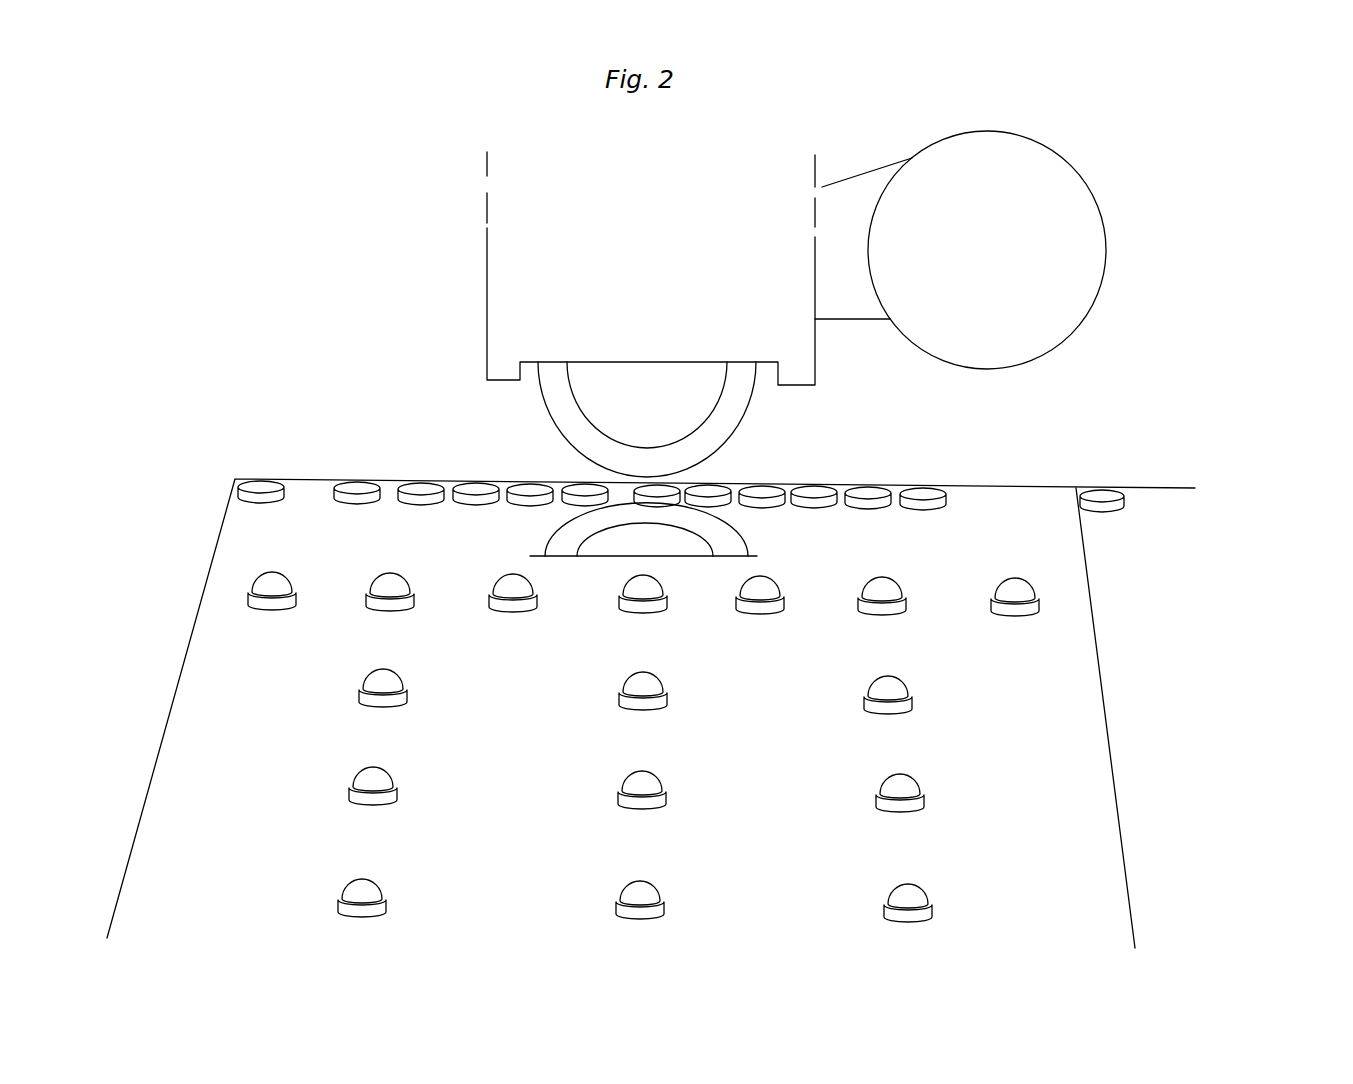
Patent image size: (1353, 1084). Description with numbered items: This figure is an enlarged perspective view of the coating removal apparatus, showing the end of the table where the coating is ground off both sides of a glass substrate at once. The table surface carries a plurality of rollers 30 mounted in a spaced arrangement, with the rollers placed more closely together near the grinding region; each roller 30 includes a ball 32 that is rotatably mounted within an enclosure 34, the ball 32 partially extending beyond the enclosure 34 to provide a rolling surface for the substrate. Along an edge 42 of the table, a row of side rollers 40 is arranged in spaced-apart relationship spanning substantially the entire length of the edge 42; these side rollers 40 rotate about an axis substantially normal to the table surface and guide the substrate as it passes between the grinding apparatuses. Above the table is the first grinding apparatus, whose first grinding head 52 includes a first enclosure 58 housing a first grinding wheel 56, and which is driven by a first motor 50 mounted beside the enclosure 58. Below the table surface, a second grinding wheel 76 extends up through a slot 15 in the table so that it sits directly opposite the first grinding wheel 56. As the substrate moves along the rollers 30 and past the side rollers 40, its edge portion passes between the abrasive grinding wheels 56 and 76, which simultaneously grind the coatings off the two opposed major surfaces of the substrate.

The slot 15 is at (652, 488).
The roller 30 is at (781, 747).
The ball 32 is at (888, 673).
The enclosure 34 is at (892, 705).
The side roller 40 is at (925, 488).
The edge 42 is at (325, 485).
The first motor 50 is at (1082, 265).
The first grinding head 52 is at (690, 165).
The first grinding wheel 56 is at (735, 412).
The first enclosure 58 is at (500, 277).
The second grinding wheel 76 is at (562, 525).